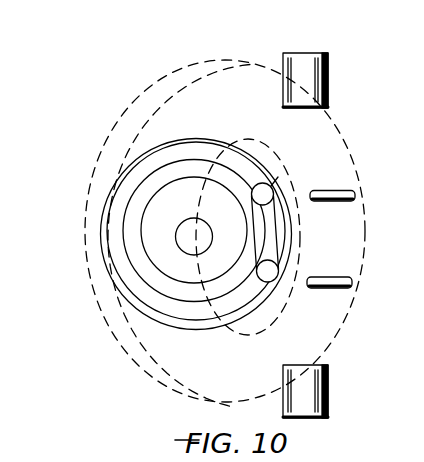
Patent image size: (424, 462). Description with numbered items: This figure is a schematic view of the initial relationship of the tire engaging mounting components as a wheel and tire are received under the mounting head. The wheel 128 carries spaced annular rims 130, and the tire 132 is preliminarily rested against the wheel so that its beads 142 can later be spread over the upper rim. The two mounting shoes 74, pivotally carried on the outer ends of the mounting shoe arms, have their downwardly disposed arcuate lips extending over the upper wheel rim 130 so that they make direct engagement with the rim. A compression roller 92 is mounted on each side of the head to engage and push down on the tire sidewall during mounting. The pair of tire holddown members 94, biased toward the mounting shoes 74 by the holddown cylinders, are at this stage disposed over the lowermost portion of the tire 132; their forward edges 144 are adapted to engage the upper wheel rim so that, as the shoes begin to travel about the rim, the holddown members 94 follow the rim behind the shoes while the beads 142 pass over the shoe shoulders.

The mounting shoe 74 is at (254, 203).
The compression roller 92 is at (330, 72).
The tire holddown member 94 is at (335, 202).
The wheel 128 is at (101, 222).
The annular rim 130 is at (197, 330).
The tire 132 is at (202, 62).
The tire beads 142 is at (261, 104).
The forward edge of holddown member 144 is at (310, 192).